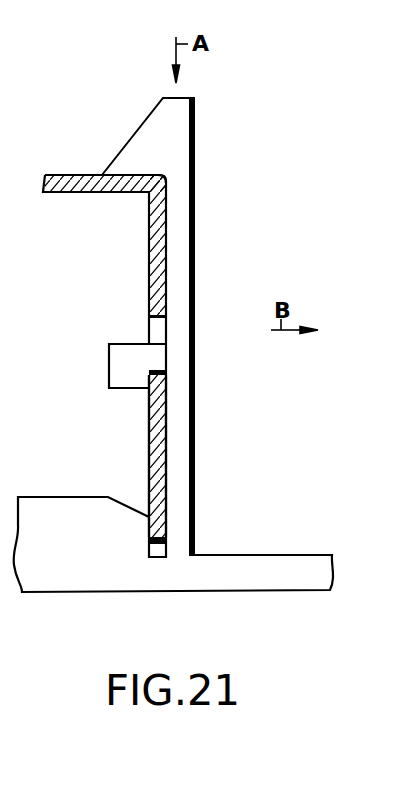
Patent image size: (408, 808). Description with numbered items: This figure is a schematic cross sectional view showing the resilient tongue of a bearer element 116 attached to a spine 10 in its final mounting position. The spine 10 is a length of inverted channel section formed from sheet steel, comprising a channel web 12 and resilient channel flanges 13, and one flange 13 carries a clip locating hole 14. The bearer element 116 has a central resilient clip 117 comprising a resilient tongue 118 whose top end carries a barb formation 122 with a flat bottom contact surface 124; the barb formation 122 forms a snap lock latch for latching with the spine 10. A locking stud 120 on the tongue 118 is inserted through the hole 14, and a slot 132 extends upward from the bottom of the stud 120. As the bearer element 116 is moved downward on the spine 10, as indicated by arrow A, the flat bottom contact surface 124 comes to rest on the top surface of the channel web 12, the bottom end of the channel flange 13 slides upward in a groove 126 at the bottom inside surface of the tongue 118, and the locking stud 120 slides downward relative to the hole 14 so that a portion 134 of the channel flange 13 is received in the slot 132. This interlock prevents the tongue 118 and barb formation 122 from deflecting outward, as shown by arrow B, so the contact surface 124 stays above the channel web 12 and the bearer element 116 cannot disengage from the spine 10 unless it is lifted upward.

The spine 10 is at (62, 175).
The channel web 12 is at (60, 193).
The channel flange 13 is at (149, 471).
The hole 14 is at (160, 332).
The bearer element 116 is at (66, 598).
The central resilient clip 117 is at (195, 197).
The resilient tongue 118 is at (195, 258).
The locking stud 120 is at (109, 358).
The barb formation 122 is at (151, 113).
The flat bottom contact surface 124 is at (134, 174).
The groove 126 is at (160, 558).
The slot 132 is at (163, 376).
The portion of the channel flange 134 is at (163, 405).